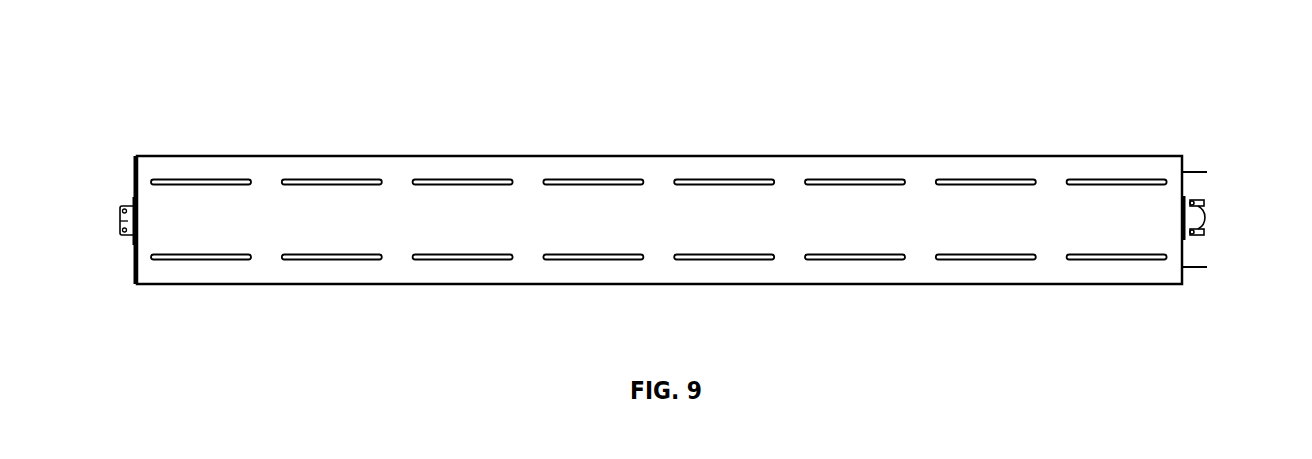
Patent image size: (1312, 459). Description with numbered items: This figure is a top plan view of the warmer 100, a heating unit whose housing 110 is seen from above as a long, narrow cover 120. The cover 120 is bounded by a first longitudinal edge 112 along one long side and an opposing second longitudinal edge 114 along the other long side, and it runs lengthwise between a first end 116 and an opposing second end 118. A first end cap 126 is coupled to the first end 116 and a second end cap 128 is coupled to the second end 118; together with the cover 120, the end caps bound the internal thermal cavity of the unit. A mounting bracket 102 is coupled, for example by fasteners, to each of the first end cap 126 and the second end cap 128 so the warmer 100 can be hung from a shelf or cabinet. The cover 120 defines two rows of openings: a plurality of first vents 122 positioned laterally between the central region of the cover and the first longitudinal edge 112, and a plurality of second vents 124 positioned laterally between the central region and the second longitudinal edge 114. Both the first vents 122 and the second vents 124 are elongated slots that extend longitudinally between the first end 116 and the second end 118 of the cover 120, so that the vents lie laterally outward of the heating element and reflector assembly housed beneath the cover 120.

The warmer 100 is at (126, 72).
The mounting bracket 102 is at (120, 222).
The housing 110 is at (395, 178).
The first longitudinal edge 112 is at (784, 134).
The second longitudinal edge 114 is at (712, 296).
The first end 116 is at (1236, 216).
The second end 118 is at (96, 212).
The cover 120 is at (533, 183).
The first vents 122 is at (315, 183).
The second vents 124 is at (330, 258).
The first end cap 126 is at (1183, 157).
The second end cap 128 is at (136, 157).